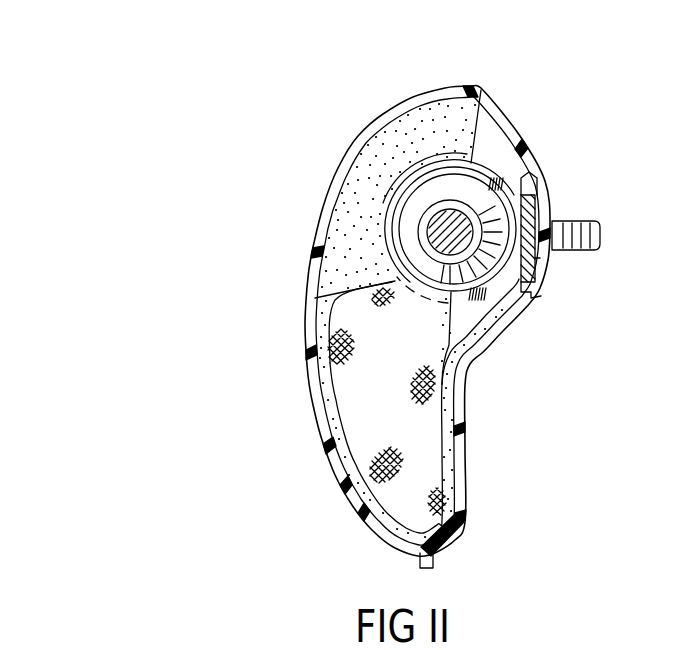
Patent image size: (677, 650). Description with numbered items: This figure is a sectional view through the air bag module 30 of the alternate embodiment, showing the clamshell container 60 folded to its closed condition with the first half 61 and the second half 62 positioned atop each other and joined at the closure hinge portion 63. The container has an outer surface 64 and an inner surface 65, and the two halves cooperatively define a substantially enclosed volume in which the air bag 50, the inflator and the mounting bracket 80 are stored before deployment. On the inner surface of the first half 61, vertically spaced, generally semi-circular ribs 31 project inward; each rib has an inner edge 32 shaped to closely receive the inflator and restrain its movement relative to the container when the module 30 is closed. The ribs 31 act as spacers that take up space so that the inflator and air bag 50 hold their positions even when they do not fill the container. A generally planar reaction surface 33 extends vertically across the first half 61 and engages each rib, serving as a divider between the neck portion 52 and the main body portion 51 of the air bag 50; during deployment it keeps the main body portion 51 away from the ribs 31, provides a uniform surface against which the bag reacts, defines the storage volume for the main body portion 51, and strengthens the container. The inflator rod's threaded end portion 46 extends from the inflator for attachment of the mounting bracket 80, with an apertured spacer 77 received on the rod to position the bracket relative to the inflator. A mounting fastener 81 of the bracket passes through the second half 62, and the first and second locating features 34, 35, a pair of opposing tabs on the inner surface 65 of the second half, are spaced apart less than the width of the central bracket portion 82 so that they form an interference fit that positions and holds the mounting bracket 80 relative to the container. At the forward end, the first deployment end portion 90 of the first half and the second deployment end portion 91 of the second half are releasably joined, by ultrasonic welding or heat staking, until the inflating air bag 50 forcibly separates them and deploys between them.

The module 30 is at (316, 479).
The clamshell container 60 is at (369, 138).
The ribs 31 is at (353, 178).
The first half 61 is at (345, 195).
The second half 62 is at (504, 333).
The outer surface 64 is at (403, 104).
The inner surface 65 is at (432, 104).
The closure hinge portion 63 is at (484, 90).
The inner edge 32 is at (385, 203).
The threaded end portion 46 is at (450, 228).
The apertured spacer 77 is at (520, 175).
The first locating feature 34 is at (540, 191).
The second locating feature 35 is at (530, 292).
The mounting bracket 80 is at (494, 285).
The central bracket portion 82 is at (527, 263).
The mounting fastener 81 is at (600, 235).
The reaction surface 33 is at (320, 320).
The air bag 50 is at (347, 400).
The neck portion 52 is at (467, 370).
The main body portion 51 is at (378, 535).
The first deployment end portion 90 is at (420, 556).
The second deployment end portion 91 is at (440, 550).